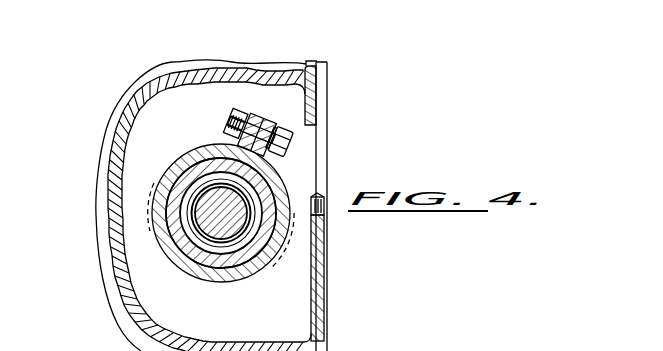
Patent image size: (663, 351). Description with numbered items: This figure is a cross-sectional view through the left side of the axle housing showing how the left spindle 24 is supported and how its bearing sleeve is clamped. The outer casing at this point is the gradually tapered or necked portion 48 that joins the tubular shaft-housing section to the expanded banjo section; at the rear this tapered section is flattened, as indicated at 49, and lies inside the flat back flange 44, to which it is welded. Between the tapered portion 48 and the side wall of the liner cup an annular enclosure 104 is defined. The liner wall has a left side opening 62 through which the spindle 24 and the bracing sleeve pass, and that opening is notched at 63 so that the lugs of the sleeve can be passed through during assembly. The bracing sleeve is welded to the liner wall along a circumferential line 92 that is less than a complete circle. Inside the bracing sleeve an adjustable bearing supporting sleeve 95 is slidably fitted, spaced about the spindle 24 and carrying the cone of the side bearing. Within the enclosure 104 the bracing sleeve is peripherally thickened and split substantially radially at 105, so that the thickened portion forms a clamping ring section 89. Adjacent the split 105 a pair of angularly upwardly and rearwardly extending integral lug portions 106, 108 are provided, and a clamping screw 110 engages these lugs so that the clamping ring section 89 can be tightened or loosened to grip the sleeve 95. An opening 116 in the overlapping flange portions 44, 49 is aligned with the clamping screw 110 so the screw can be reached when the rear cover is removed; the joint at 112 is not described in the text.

The left axle spindle 24 is at (238, 236).
The flat back flange 44 is at (330, 89).
The tapered portion of the banjo section 48 is at (128, 138).
The flattened portion of the tapered section 49 is at (312, 304).
The left side opening in the liner cup 62 is at (194, 150).
The notch in the left side opening 63 is at (248, 142).
The clamping ring section of the sleeve 89 is at (203, 283).
The circumferential weld line 92 is at (150, 203).
The adjustable bearing supporting sleeve 95 is at (213, 275).
The annular enclosure 104 is at (133, 159).
The radial split in the clamping ring 105 is at (250, 127).
The integral lug portion 106 is at (232, 110).
The integral lug portion 108 is at (322, 107).
The clamping screw 110 is at (283, 151).
The joint 112 is at (313, 64).
The access opening 116 is at (329, 167).